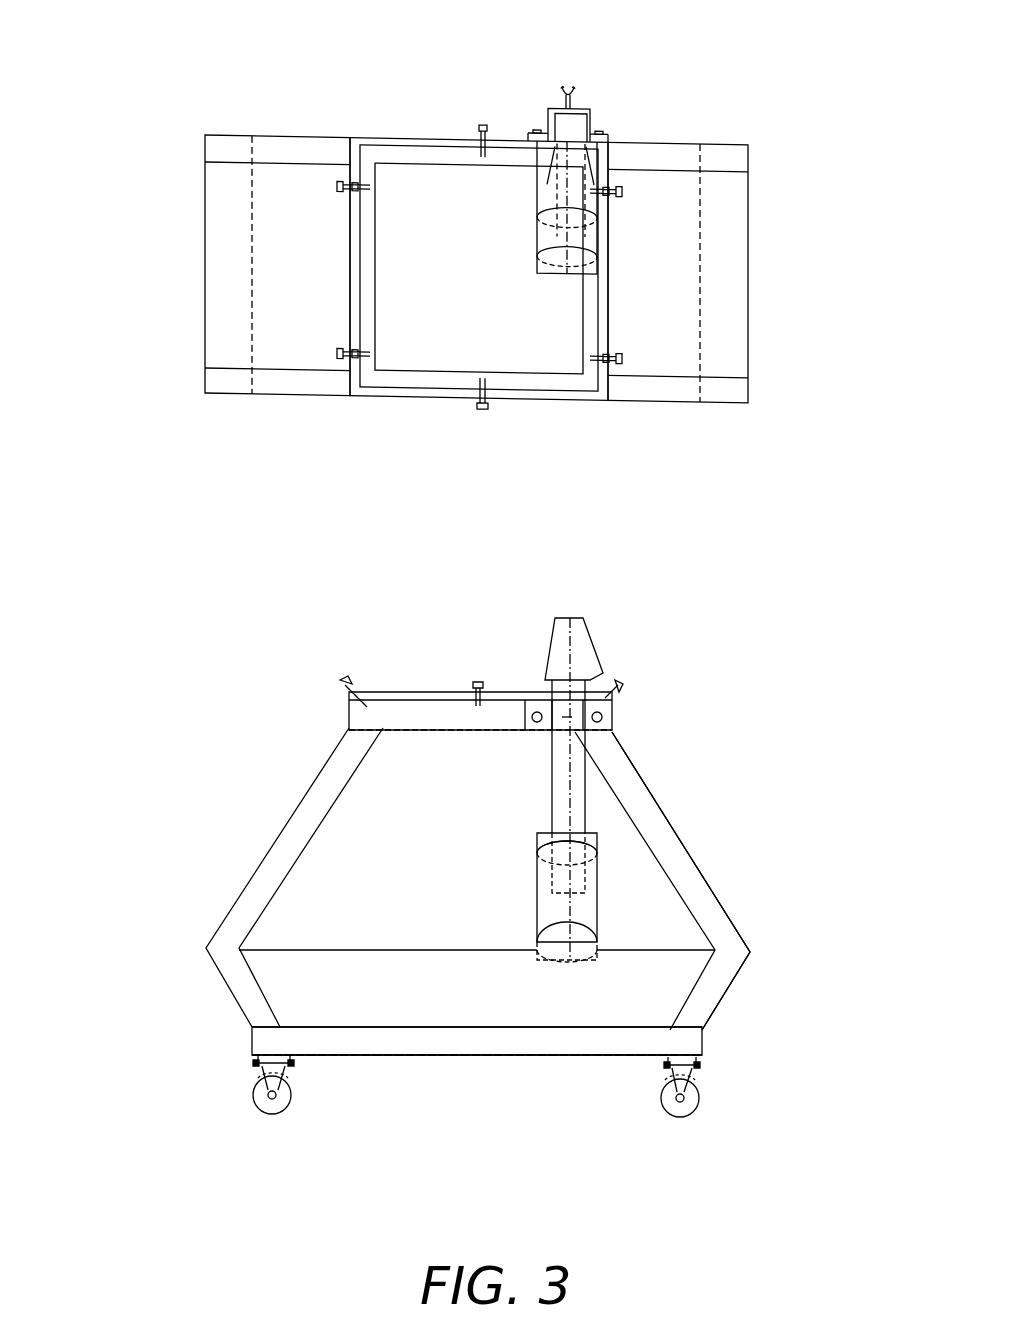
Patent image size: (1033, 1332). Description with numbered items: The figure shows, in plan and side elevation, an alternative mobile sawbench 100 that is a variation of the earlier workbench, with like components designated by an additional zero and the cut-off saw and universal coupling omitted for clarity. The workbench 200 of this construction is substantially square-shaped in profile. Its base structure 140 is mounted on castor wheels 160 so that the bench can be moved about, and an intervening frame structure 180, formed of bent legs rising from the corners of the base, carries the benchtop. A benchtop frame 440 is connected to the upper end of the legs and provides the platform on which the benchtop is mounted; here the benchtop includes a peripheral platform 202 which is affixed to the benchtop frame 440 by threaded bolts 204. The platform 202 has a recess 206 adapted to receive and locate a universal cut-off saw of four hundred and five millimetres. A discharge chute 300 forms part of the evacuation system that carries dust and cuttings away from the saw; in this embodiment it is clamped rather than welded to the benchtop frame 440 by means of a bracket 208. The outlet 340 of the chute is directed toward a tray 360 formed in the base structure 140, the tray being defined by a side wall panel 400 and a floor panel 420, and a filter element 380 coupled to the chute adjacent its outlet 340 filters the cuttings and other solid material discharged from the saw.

The mobile sawbench 100 is at (678, 735).
The base structure 140 is at (241, 1042).
The castor wheels 160 is at (290, 1097).
The intervening frame structure 180 is at (700, 903).
The workbench 200 is at (342, 655).
The peripheral platform 202 is at (383, 155).
The threaded bolts 204 is at (486, 402).
The recess 206 is at (479, 275).
The bracket 208 is at (590, 101).
The discharge chute 300 is at (568, 812).
The outlet 340 is at (523, 904).
The tray 360 is at (339, 935).
The filter element 380 is at (603, 857).
The side wall panel 400 is at (510, 1015).
The floor panel 420 is at (497, 1062).
The benchtop frame 440 is at (378, 717).